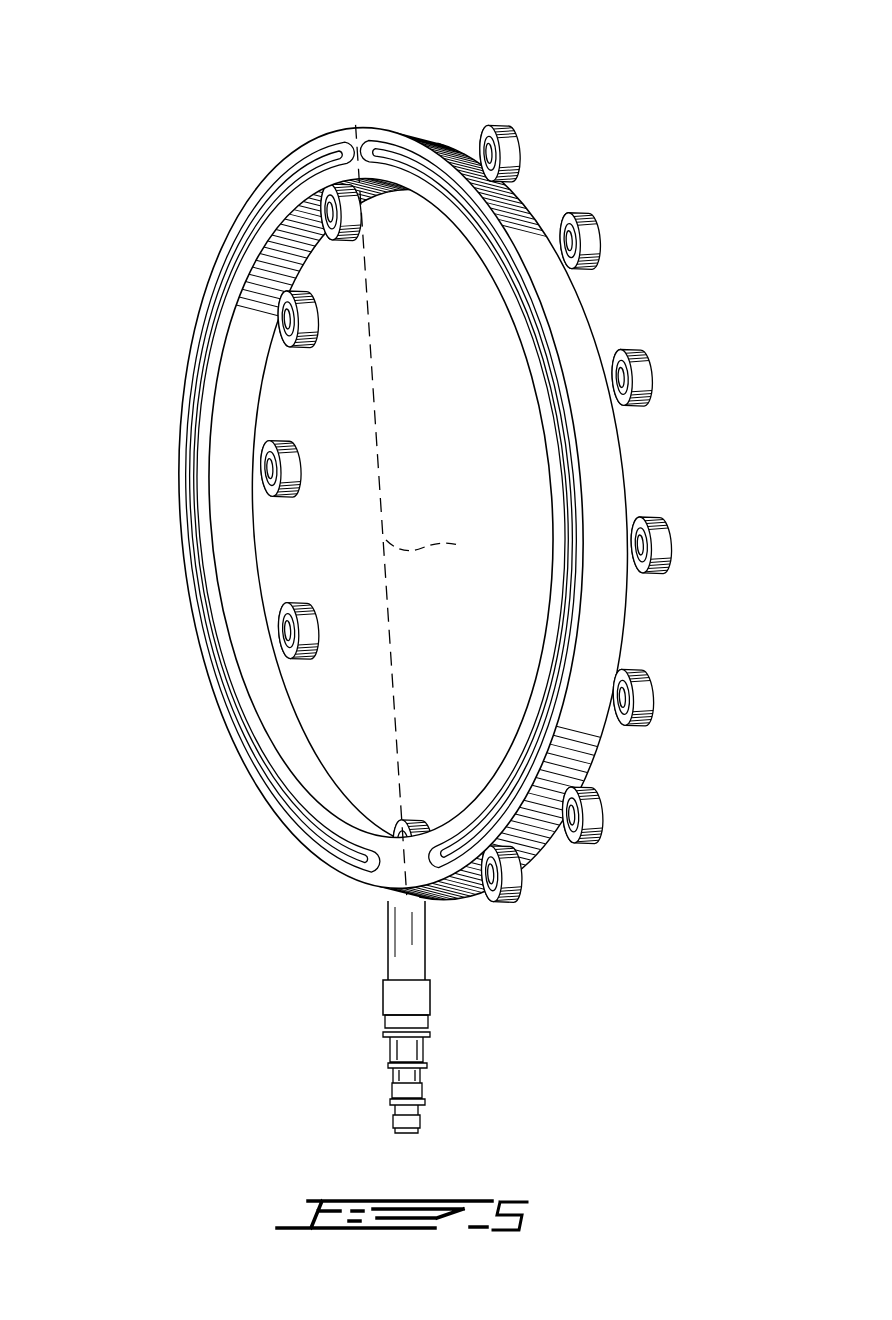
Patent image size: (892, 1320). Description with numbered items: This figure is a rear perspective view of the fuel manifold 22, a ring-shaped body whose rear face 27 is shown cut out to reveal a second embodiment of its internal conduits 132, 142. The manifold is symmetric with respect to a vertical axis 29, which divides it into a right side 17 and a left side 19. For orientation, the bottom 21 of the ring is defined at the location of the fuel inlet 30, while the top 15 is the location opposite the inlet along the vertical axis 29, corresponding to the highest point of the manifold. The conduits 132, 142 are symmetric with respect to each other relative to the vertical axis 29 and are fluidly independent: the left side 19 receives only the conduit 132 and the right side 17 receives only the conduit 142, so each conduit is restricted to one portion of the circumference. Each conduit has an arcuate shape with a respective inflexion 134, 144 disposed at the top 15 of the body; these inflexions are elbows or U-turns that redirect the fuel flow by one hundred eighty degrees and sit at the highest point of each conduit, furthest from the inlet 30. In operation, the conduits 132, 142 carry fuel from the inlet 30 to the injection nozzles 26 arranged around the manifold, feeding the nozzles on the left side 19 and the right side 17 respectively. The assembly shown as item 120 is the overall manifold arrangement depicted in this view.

The gas distribution ring 120 is at (416, 470).
The top 15 is at (356, 120).
The inflexion 134 is at (368, 136).
The inflexion 144 is at (326, 140).
The left side 19 is at (573, 318).
The rear face 27 is at (210, 409).
The conduit 132 is at (567, 468).
The conduit 142 is at (191, 497).
The vertical axis 29 is at (438, 544).
The fuel manifold 22 is at (630, 620).
The injection nozzles 26 is at (656, 698).
The right side 17 is at (222, 700).
The bottom 21 is at (415, 898).
The inlet 30 is at (412, 1000).